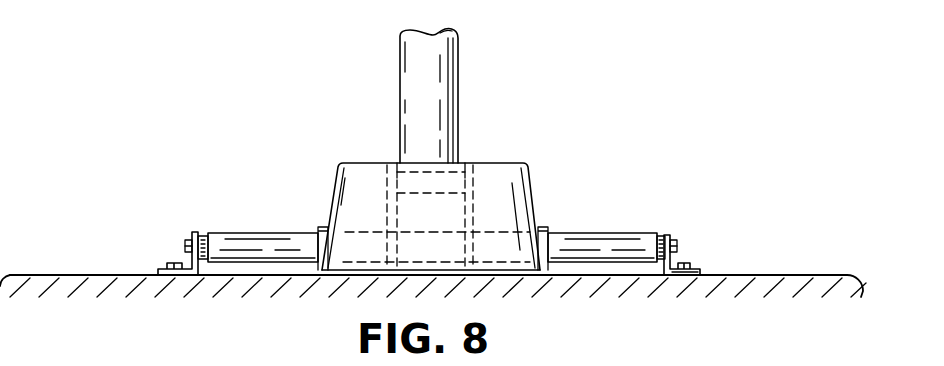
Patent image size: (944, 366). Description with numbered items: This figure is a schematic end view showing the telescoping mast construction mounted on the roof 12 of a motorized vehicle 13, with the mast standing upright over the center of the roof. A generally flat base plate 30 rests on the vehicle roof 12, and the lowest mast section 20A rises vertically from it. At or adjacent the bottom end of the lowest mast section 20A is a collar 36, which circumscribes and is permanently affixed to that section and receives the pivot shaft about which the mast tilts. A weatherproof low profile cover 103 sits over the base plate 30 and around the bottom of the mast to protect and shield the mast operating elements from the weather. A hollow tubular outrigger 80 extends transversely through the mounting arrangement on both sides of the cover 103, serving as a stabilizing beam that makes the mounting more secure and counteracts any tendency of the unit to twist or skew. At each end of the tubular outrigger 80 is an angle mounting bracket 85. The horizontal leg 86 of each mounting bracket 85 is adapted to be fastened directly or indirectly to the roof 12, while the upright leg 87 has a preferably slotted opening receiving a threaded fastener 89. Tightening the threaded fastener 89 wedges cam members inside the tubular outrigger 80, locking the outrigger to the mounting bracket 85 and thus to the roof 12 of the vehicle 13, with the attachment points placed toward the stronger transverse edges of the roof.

The lowest mast section 20A is at (448, 62).
The collar 36 is at (425, 175).
The weatherproof low profile cover 103 is at (500, 162).
The base plate 30 is at (512, 275).
The tubular outrigger 80 is at (582, 232).
The angle mounting bracket 85 is at (193, 230).
The upright leg 87 is at (668, 236).
The threaded fastener 89 is at (185, 245).
The horizontal leg 86 is at (680, 275).
The roof 12 is at (777, 275).
The motorized vehicle 13 is at (823, 272).